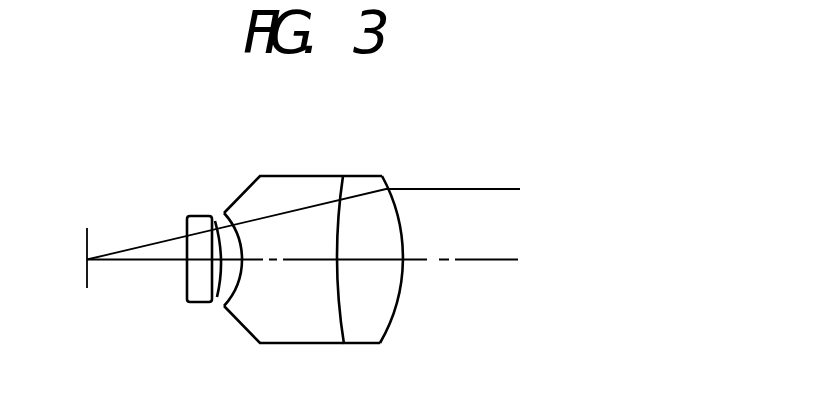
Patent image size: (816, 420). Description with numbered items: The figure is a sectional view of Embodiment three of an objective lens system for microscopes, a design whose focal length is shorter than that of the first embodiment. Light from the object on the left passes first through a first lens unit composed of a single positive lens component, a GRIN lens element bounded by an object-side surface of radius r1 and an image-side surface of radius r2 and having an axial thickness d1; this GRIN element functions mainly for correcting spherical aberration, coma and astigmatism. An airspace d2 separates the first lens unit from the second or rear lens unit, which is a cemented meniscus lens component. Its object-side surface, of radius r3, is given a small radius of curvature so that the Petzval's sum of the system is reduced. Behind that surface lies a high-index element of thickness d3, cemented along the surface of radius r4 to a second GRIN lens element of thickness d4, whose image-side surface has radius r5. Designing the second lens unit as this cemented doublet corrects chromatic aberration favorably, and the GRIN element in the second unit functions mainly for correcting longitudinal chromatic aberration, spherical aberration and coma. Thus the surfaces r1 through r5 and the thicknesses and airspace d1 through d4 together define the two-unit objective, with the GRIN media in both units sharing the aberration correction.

The radius of curvature of first surface r1 is at (166, 295).
The radius of curvature of second surface r2 is at (215, 221).
The radius of curvature of third surface r3 is at (221, 324).
The radius of curvature of fourth surface r4 is at (330, 216).
The radius of curvature of fifth surface r5 is at (396, 220).
The thickness of first lens element d1 is at (178, 214).
The airspace between first and second lens units d2 is at (215, 231).
The thickness of second lens element d3 is at (284, 239).
The thickness of third lens element d4 is at (379, 248).